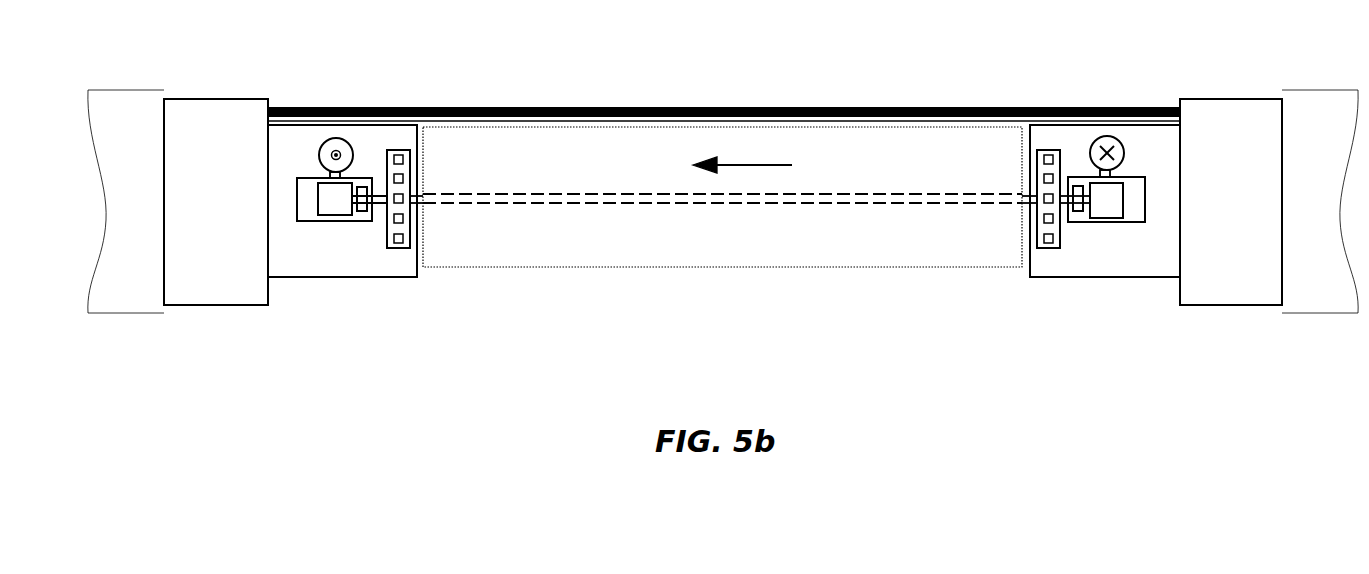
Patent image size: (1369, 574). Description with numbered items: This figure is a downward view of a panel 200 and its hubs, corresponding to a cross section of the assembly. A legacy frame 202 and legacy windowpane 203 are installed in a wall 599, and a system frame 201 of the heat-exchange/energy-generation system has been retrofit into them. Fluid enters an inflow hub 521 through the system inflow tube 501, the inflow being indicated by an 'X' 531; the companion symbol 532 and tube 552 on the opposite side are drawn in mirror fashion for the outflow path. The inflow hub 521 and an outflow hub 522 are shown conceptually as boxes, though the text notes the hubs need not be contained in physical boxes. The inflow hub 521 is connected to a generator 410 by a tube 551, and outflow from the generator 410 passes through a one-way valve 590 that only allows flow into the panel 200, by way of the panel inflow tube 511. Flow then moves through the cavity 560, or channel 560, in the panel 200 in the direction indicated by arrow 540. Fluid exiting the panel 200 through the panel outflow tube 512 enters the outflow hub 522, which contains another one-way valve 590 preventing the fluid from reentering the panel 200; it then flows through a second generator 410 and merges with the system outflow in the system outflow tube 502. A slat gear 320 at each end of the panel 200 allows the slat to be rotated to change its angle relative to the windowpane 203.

The panel 200 is at (638, 267).
The system frame 201 is at (377, 277).
The legacy frame 202 is at (175, 305).
The legacy windowpane 203 is at (580, 107).
The slat gear 320 is at (397, 248).
The generator 410 is at (328, 218).
The system inflow tube 501 is at (1097, 141).
The system outflow tube 502 is at (338, 139).
The panel inflow tube 511 is at (1033, 127).
The panel outflow tube 512 is at (380, 205).
The inflow hub 521 is at (1088, 177).
The outflow hub 522 is at (297, 199).
The 'X' flow indicator 531 is at (1110, 138).
The left coupler stem 532 is at (333, 139).
The arrow 540 is at (735, 165).
The tube 551 is at (1113, 172).
The left optical port 552 is at (321, 166).
The cavity 560 is at (578, 193).
The one-way valve 590 is at (364, 211).
The wall 599 is at (128, 313).